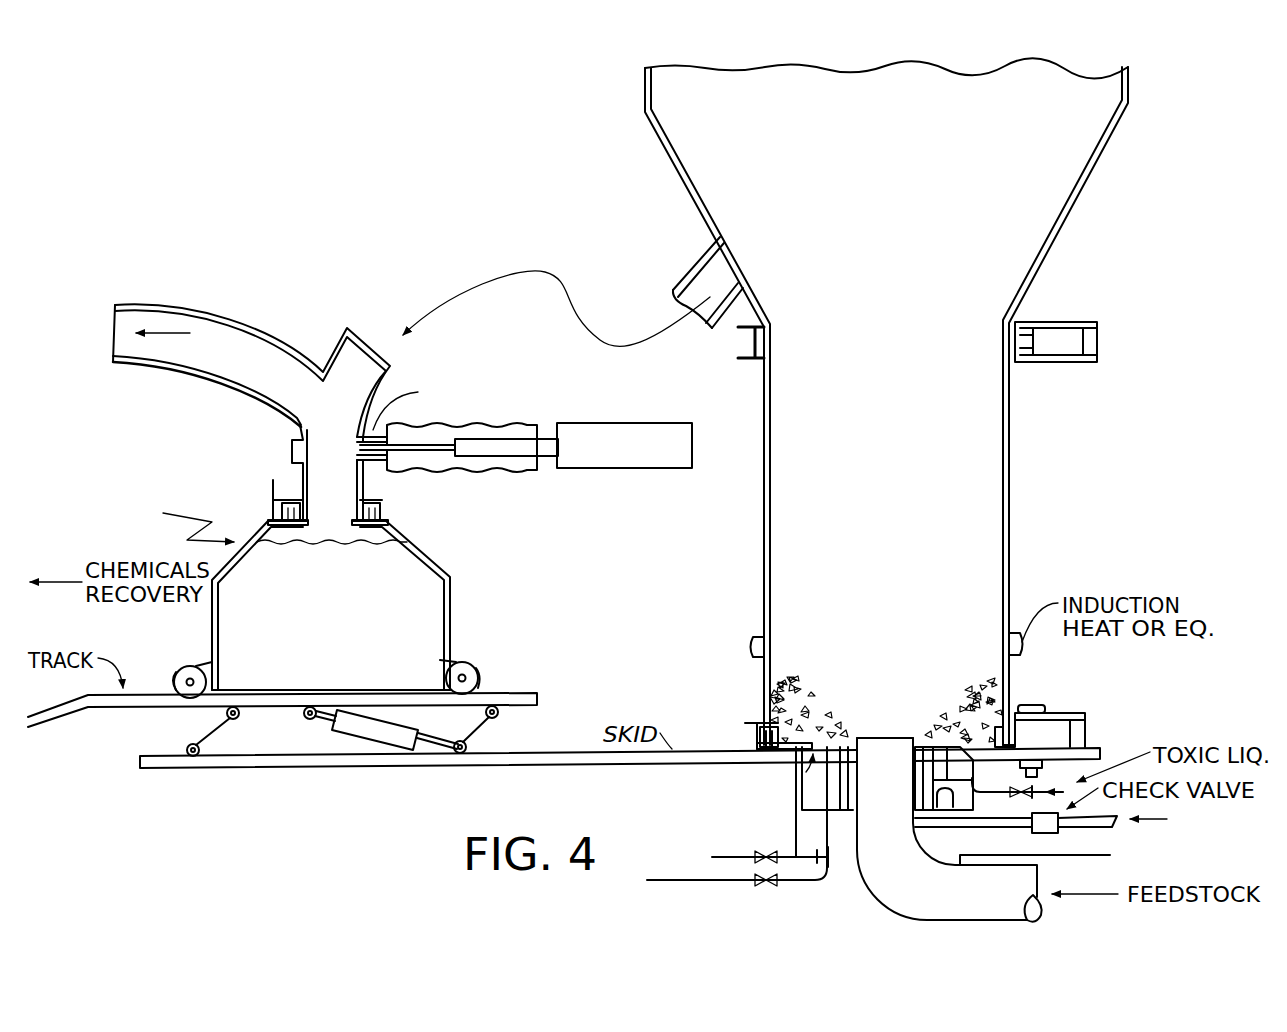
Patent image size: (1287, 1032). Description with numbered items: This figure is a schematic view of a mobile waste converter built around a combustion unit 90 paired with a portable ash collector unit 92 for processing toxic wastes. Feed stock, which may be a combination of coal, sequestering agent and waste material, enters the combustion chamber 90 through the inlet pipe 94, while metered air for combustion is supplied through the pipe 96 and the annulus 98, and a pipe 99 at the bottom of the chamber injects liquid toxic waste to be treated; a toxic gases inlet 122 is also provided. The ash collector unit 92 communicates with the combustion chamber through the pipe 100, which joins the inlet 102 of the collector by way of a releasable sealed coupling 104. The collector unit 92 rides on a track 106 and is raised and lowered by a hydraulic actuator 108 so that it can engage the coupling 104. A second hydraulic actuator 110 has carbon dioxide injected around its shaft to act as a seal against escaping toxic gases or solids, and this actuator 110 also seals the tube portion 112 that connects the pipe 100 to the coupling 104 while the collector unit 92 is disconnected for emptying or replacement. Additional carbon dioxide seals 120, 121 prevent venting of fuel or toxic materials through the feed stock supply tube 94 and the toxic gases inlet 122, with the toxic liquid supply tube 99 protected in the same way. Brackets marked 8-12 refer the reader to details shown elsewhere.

The combustion unit 90 is at (764, 546).
The portable ash collector unit 92 is at (418, 568).
The inlet pipe 94 is at (890, 882).
The pipe 96 is at (980, 828).
The annulus 98 is at (797, 784).
The pipe 99 is at (983, 787).
The pipe 100 is at (696, 274).
The inlet 102 is at (355, 514).
The releasable sealed coupling 104 is at (385, 510).
The track 106 is at (508, 693).
The hydraulic actuator 108 is at (381, 738).
The hydraulic actuator 110 is at (424, 372).
The tube portion 112 is at (296, 423).
The CO2 seal 120 is at (1065, 856).
The CO2 seal 121 is at (728, 856).
The toxic gases inlet 122 is at (799, 882).
The reference to FIGS. 8-12 brackets 8-12 is at (1068, 311).